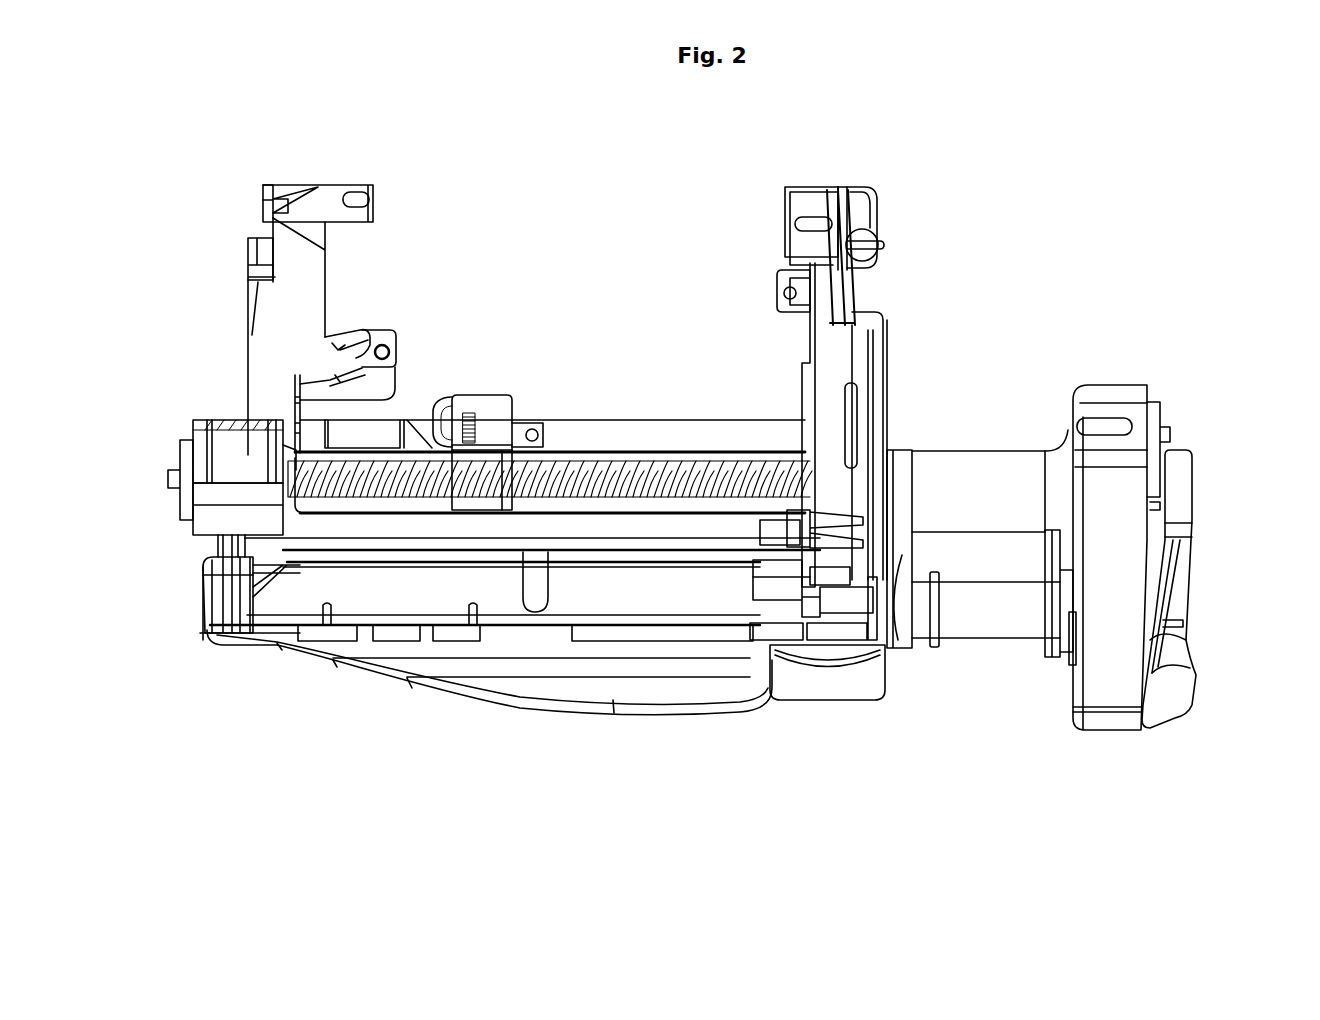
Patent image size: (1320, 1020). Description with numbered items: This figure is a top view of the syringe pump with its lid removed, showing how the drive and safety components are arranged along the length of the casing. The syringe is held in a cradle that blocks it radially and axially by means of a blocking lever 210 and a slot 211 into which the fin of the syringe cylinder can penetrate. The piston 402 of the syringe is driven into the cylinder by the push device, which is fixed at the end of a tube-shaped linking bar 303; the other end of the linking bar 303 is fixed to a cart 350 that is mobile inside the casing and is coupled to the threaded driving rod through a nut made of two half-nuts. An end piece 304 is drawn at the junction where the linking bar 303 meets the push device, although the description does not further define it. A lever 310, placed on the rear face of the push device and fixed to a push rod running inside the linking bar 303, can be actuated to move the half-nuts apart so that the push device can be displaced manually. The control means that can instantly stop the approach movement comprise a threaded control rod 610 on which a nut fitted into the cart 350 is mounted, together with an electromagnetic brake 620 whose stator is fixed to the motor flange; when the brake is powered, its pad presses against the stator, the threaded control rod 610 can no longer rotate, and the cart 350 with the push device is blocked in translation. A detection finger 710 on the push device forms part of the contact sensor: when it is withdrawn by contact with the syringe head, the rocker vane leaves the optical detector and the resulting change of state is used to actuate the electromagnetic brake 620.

The blocking lever 210 is at (820, 678).
The slot 211 is at (905, 560).
The linking bar 303 is at (1012, 468).
The shaft end piece 304 is at (1049, 655).
The lever 310 is at (1175, 583).
The cart 350 is at (500, 398).
The piston 402 is at (970, 622).
The threaded control rod 610 is at (618, 468).
The electromagnetic brake 620 is at (238, 450).
The detection finger 710 is at (1067, 675).